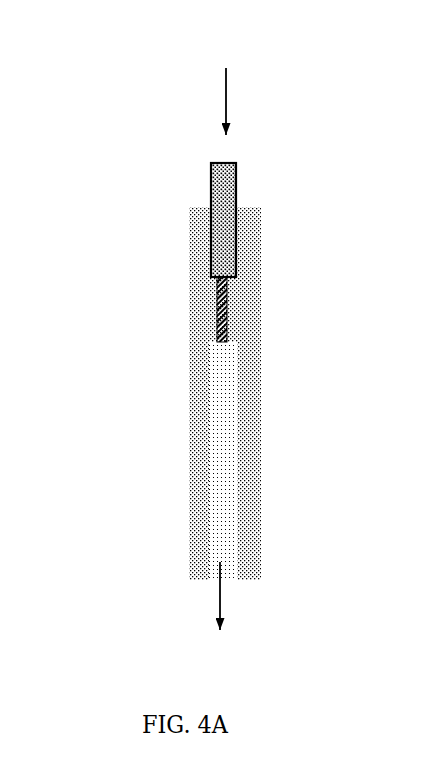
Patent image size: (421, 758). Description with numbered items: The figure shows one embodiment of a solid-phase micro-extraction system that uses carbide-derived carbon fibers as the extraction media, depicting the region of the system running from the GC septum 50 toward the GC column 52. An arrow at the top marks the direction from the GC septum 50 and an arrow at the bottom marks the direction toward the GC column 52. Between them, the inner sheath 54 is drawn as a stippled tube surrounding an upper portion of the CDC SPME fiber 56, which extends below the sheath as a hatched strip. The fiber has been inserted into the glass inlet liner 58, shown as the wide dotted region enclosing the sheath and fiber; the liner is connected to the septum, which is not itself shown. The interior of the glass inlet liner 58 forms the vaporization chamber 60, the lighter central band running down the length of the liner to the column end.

The GC septum 50 is at (230, 83).
The GC column 52 is at (217, 615).
The inner sheath 54 is at (228, 240).
The CDC SPME fiber 56 is at (229, 318).
The glass inlet liner 58 is at (187, 355).
The vaporization chamber 60 is at (225, 448).